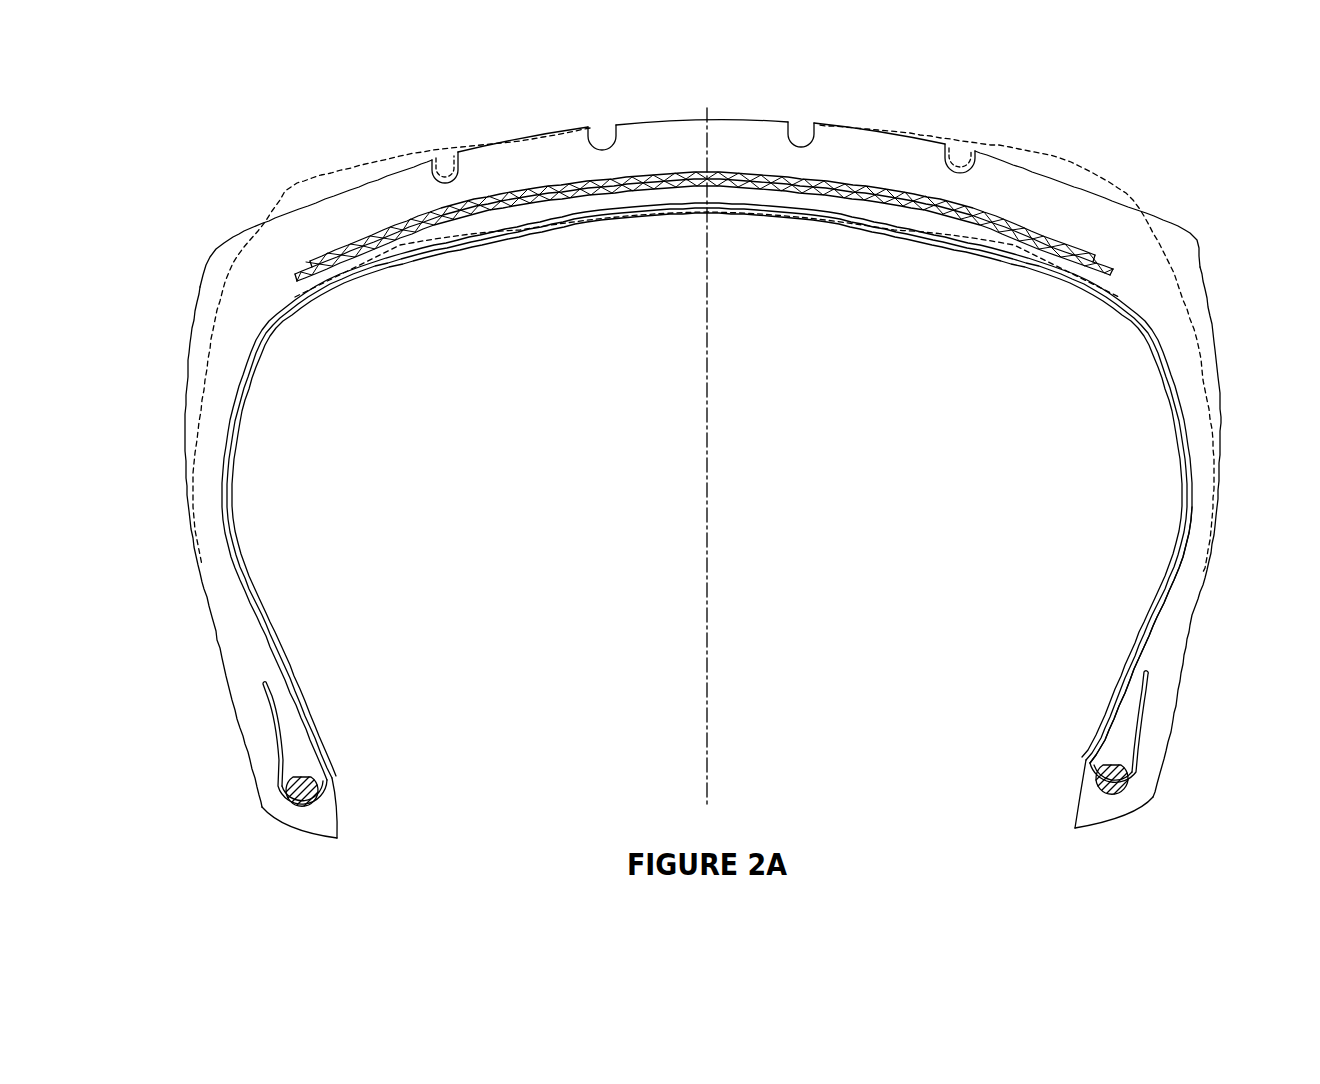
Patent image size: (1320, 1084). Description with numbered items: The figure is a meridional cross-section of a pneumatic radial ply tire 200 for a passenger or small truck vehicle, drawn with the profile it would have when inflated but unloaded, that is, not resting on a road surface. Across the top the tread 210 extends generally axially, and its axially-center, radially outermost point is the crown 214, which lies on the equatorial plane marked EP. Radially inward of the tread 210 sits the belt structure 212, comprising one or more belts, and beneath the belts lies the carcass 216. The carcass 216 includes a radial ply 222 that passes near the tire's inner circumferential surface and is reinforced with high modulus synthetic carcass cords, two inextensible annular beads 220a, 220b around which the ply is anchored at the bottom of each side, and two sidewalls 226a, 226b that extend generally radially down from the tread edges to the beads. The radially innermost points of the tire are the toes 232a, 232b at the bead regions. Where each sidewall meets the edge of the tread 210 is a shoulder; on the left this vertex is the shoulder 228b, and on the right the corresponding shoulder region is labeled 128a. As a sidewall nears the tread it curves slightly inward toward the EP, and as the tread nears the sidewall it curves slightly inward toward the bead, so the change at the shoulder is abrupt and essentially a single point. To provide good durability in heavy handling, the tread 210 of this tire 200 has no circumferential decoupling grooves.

The pneumatic radial ply tire 200 is at (1156, 164).
The tread 210 is at (1007, 152).
The belt structure 212 is at (866, 187).
The crown 214 is at (708, 118).
The carcass 216 is at (800, 212).
The bead 220a is at (1120, 786).
The bead 220b is at (298, 790).
The radial ply 222 is at (1176, 512).
The sidewall 226a is at (1222, 465).
The sidewall 226b is at (203, 560).
The shoulder 228b is at (208, 258).
The shoulder region 128a is at (1193, 238).
The toe 232a is at (1075, 828).
The toe 232b is at (337, 838).